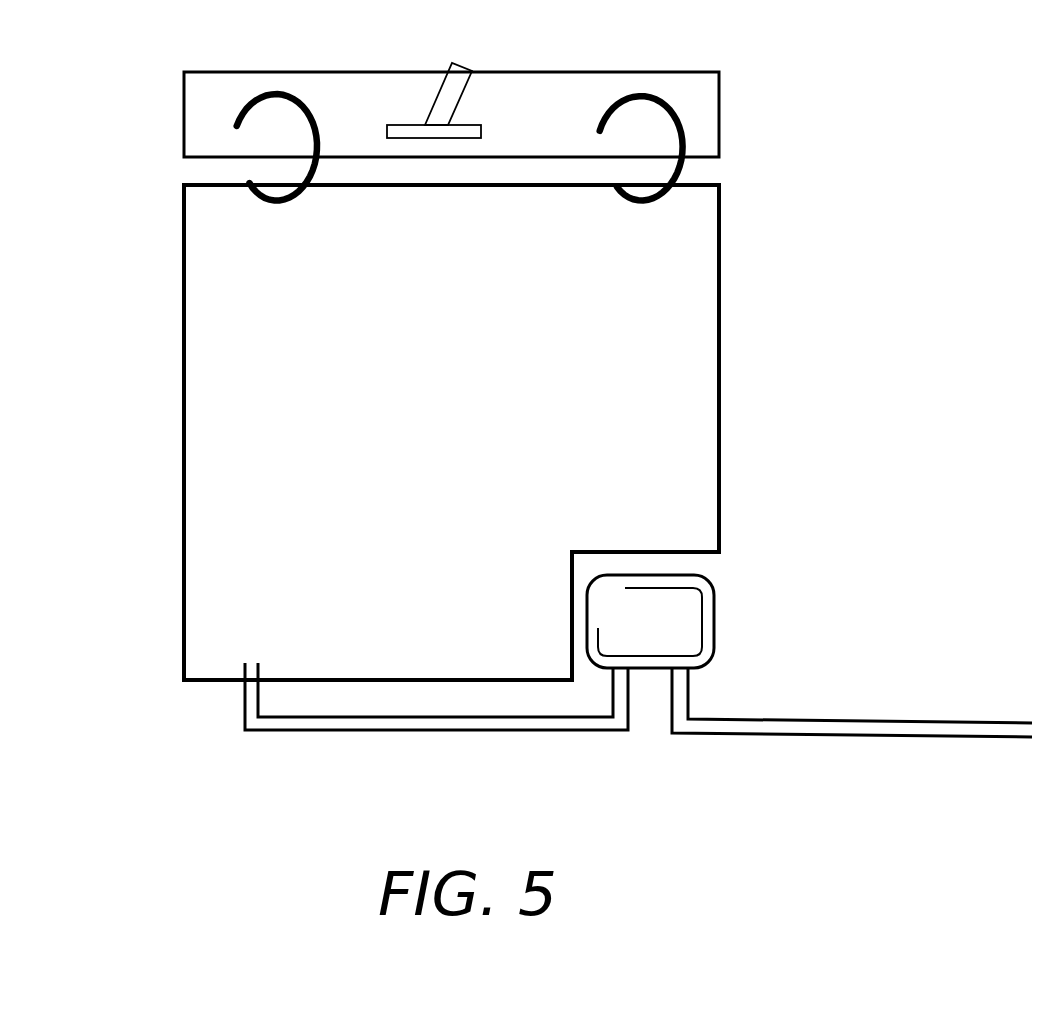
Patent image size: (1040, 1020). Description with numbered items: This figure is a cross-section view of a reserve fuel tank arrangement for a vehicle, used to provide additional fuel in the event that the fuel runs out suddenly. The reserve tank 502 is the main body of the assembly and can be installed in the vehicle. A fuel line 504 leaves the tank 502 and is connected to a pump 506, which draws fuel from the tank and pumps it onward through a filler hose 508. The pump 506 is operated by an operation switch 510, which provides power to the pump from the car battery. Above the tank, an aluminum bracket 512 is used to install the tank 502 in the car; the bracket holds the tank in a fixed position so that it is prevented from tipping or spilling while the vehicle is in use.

The reserve tank 502 is at (184, 487).
The fuel line 504 is at (460, 735).
The pump 506 is at (717, 618).
The filler hose 508 is at (910, 722).
The operation switch 510 is at (470, 110).
The aluminum bracket 512 is at (183, 113).